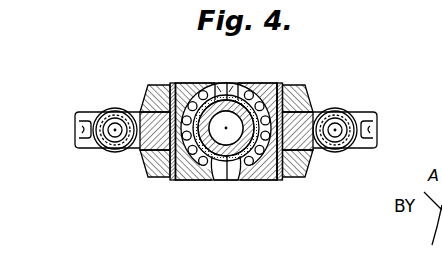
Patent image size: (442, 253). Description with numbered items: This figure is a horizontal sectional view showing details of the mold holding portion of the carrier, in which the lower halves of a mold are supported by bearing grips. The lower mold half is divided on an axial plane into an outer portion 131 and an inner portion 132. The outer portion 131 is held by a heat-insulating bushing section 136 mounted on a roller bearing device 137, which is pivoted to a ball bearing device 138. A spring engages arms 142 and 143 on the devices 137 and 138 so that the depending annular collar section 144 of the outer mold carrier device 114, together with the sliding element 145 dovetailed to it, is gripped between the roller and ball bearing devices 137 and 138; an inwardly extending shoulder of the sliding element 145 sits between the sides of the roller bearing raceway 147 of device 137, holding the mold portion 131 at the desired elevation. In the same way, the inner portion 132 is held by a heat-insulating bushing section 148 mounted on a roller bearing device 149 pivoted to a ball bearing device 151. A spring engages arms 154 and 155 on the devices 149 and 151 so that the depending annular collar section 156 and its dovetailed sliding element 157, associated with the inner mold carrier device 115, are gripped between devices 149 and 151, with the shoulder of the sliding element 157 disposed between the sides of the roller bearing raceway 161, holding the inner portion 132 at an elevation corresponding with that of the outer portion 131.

The outer mold carrier device 114 is at (142, 100).
The inner mold carrier device 115 is at (308, 84).
The outer portion 131 is at (221, 87).
The inner portion 132 is at (248, 84).
The heat-insulating bushing section 136 is at (215, 183).
The roller bearing device 137 is at (185, 182).
The ball bearing device 138 is at (113, 153).
The arm 142 is at (83, 113).
The arm 143 is at (78, 137).
The depending annular collar section 144 is at (152, 181).
The sliding element 145 is at (192, 83).
The roller bearing raceway 147 is at (172, 99).
The heat-insulating bushing section 148 is at (236, 180).
The roller bearing device 149 is at (279, 86).
The ball bearing device 151 is at (343, 149).
The arm 154 is at (376, 149).
The arm 155 is at (372, 122).
The depending annular collar section 156 is at (300, 182).
The sliding element 157 is at (270, 182).
The roller bearing raceway 161 is at (316, 112).